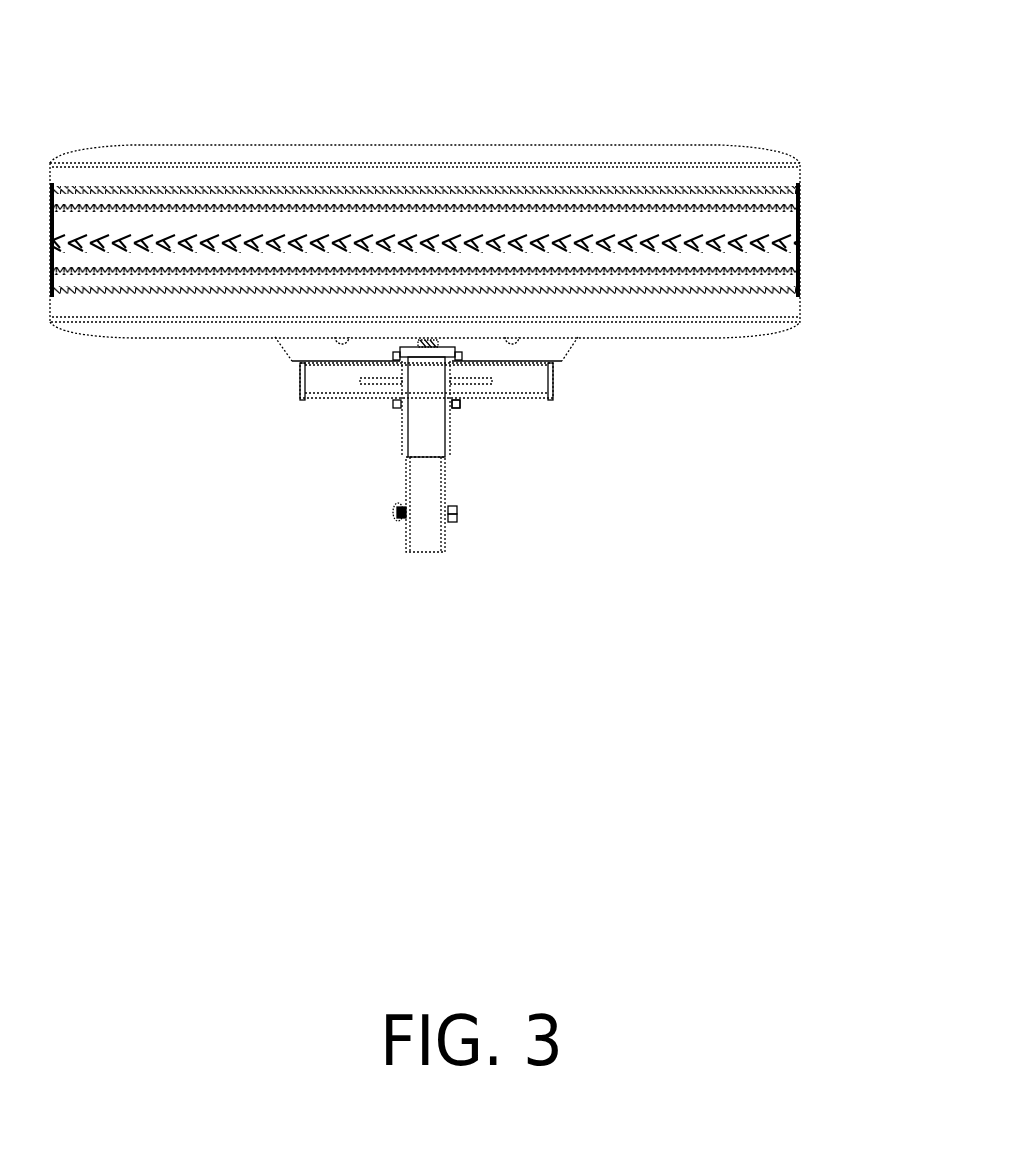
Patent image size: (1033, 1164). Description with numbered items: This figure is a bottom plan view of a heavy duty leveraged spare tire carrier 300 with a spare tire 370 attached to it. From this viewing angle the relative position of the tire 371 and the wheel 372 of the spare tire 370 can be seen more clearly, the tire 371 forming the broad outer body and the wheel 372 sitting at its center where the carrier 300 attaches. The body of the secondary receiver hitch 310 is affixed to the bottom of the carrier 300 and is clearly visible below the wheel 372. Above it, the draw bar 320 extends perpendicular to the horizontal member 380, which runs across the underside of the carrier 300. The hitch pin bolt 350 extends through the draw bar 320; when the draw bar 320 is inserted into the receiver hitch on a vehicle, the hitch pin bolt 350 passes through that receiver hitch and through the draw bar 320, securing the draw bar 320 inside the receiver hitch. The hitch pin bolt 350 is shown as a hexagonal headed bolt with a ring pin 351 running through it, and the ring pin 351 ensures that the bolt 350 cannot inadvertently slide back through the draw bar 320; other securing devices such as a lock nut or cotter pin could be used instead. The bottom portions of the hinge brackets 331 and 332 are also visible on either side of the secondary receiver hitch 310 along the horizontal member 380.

The heavy duty leveraged spare tire carrier 300 is at (216, 912).
The secondary receiver hitch 310 is at (437, 447).
The draw bar 320 is at (420, 495).
The hinge bracket 331 is at (460, 357).
The hinge bracket 332 is at (455, 405).
The hitch pin bolt 350 is at (450, 521).
The ring pin 351 is at (395, 522).
The spare tire 370 is at (365, 96).
The tire 371 is at (553, 143).
The wheel 372 is at (566, 349).
The horizontal member 380 is at (305, 383).